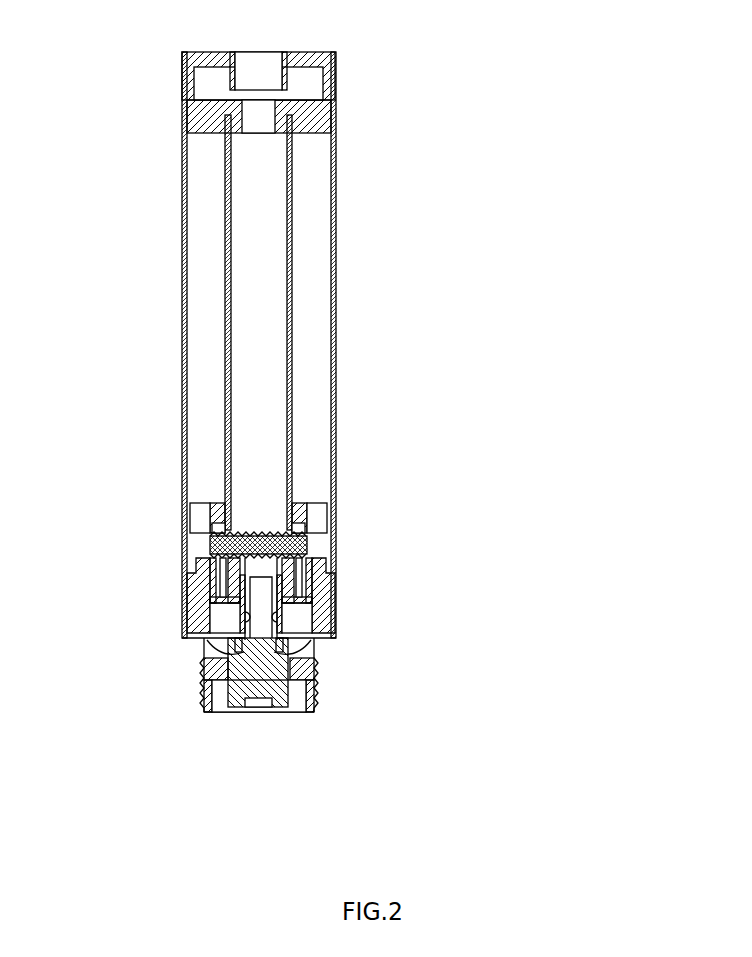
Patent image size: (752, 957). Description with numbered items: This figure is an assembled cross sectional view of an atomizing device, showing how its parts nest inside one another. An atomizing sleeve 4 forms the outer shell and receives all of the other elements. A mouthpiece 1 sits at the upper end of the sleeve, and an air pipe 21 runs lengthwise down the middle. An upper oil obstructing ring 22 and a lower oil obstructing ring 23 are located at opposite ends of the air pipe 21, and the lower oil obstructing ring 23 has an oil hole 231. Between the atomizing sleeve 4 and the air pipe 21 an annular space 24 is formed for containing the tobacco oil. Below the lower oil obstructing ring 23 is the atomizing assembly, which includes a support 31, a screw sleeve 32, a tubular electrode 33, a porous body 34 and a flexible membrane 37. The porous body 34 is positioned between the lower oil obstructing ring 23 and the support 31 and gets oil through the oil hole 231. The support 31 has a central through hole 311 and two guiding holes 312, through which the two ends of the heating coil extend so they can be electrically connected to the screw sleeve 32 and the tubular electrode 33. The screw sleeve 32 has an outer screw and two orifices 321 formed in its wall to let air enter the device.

The mouthpiece 1 is at (297, 66).
The atomizing sleeve 4 is at (304, 345).
The air pipe 21 is at (182, 322).
The upper oil obstructing ring 22 is at (307, 132).
The lower oil obstructing ring 23 is at (253, 468).
The oil hole 231 is at (200, 467).
The annular space 24 is at (141, 205).
The support 31 is at (321, 541).
The screw sleeve 32 is at (246, 604).
The central through hole 311 is at (178, 604).
The guiding holes 312 is at (180, 579).
The orifices 321 is at (328, 687).
The tubular electrode 33 is at (346, 625).
The porous body 34 is at (193, 510).
The flexible membrane 37 is at (266, 681).